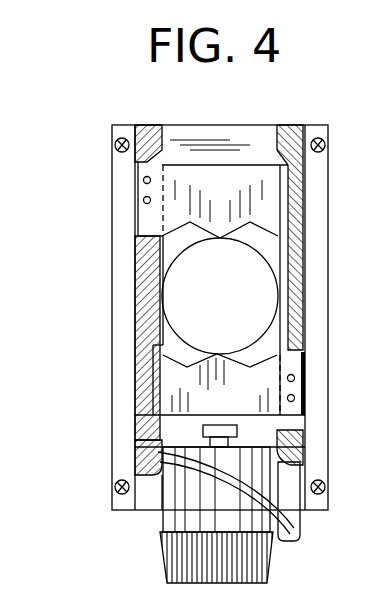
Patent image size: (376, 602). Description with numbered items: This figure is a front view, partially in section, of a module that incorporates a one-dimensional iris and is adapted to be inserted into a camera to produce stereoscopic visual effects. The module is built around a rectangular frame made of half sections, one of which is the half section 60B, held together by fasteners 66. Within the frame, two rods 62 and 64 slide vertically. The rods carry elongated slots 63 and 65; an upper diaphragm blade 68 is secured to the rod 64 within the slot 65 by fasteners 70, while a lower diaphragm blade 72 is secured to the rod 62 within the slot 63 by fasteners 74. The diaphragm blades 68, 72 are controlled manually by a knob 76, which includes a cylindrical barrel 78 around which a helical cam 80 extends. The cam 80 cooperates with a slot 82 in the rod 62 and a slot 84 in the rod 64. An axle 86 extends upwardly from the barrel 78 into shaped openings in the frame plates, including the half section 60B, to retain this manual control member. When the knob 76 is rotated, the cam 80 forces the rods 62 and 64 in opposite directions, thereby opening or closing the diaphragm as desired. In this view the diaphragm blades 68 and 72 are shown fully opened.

The half section 60B is at (113, 207).
The rod 62 is at (300, 440).
The elongated slot 63 is at (305, 270).
The rod 64 is at (147, 127).
The elongated slot 65 is at (152, 290).
The fasteners 66 is at (326, 487).
The upper diaphragm blade 68 is at (290, 167).
The fasteners 70 is at (143, 199).
The lower diaphragm blade 72 is at (155, 385).
The fasteners 74 is at (296, 398).
The knob 76 is at (268, 575).
The cylindrical barrel 78 is at (292, 472).
The helical cam 80 is at (216, 489).
The slot 82 is at (300, 530).
The slot 84 is at (150, 462).
The axle 86 is at (203, 431).